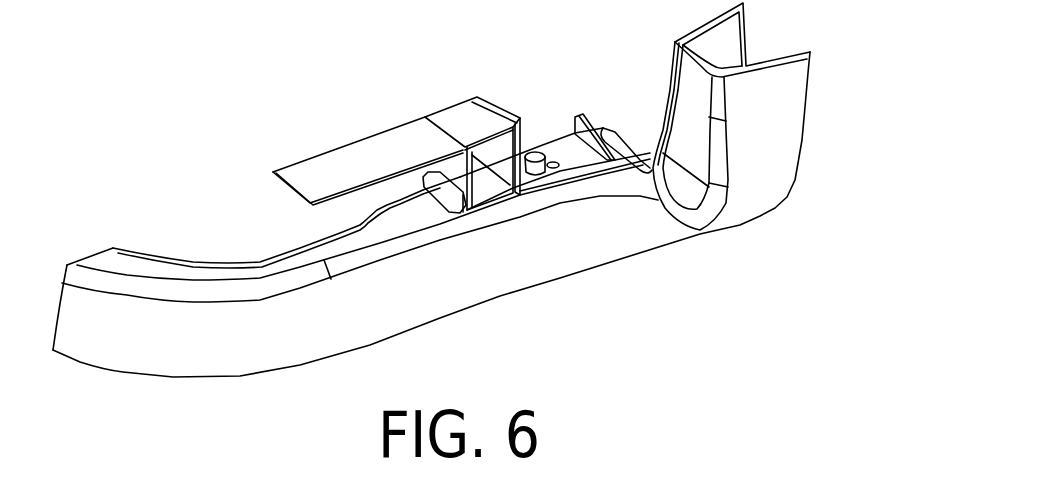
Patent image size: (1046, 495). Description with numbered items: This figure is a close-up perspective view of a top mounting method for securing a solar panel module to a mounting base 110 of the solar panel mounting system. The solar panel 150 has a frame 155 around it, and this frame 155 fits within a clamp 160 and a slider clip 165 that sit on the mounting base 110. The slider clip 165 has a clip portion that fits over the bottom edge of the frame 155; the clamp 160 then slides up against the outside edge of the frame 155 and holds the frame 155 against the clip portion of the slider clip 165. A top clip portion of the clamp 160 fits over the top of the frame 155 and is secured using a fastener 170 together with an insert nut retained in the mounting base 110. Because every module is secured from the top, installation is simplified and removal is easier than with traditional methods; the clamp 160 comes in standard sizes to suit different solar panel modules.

The mounting base 110 is at (200, 273).
The solar panel 150 is at (375, 155).
The frame 155 is at (448, 110).
The clamp 160 is at (490, 100).
The slider clip 165 is at (582, 160).
The fastener 170 is at (528, 147).